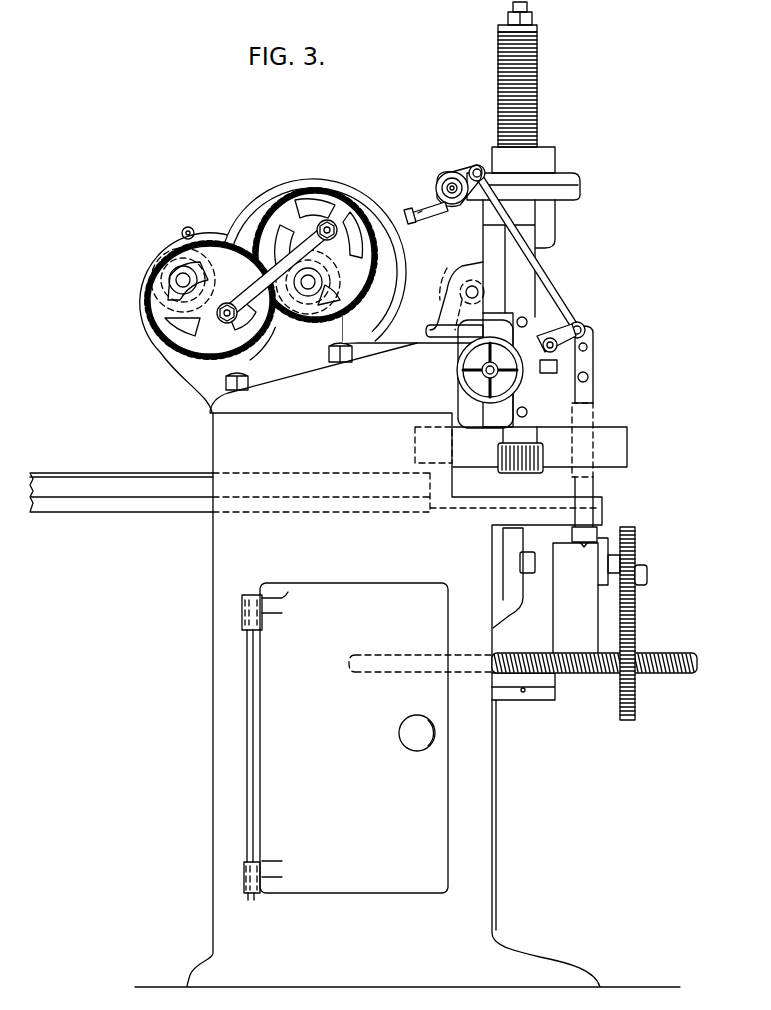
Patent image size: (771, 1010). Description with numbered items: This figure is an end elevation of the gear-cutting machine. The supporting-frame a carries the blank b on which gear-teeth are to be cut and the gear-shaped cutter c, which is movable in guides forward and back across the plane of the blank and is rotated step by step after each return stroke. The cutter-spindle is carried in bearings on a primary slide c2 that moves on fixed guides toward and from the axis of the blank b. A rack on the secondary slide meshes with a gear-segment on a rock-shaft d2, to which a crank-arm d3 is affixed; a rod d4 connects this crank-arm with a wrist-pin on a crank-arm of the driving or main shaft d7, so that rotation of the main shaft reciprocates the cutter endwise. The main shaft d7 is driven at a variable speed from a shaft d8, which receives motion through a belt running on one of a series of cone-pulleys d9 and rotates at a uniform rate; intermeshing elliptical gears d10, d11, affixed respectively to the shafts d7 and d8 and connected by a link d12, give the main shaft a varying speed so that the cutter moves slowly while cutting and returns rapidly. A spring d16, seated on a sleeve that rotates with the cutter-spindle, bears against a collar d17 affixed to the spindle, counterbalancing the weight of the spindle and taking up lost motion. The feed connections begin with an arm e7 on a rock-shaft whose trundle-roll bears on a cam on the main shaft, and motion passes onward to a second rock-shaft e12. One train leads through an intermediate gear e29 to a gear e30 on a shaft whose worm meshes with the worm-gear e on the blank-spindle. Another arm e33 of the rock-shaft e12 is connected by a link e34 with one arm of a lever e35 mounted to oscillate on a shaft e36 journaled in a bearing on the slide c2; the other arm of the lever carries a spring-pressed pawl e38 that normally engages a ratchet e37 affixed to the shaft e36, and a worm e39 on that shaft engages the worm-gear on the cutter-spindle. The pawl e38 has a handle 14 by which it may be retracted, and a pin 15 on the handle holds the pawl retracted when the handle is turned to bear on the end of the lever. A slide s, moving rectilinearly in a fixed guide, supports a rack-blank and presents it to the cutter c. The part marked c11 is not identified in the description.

The supporting-frame a is at (407, 610).
The slide s is at (127, 483).
The blank b is at (618, 451).
The gear-shaped cutter c is at (498, 458).
The primary slide c2 is at (490, 228).
The column bracket c11 is at (548, 216).
The rock-shaft d2 is at (465, 288).
The crank-arm d3 is at (444, 312).
The rod d4 is at (405, 326).
The main shaft d7 is at (165, 277).
The shaft d8 is at (306, 295).
The cone-pulleys d9 is at (247, 208).
The elliptical gear d10 is at (210, 237).
The elliptical gear d11 is at (317, 185).
The link d12 is at (270, 222).
The spring d16 is at (538, 91).
The collar d17 is at (537, 28).
The worm-gear e is at (586, 668).
The arm e7 is at (196, 226).
The rock-shaft e12 is at (556, 342).
The intermediate gear e29 is at (636, 531).
The gear e30 is at (637, 716).
The arm e33 is at (576, 322).
The link e34 is at (546, 275).
The lever e35 is at (476, 167).
The shaft e36 is at (441, 184).
The ratchet e37 is at (448, 176).
The spring-pressed pawl e38 is at (432, 193).
The worm e39 is at (453, 180).
The handle 14 is at (406, 211).
The pin 15 is at (428, 207).